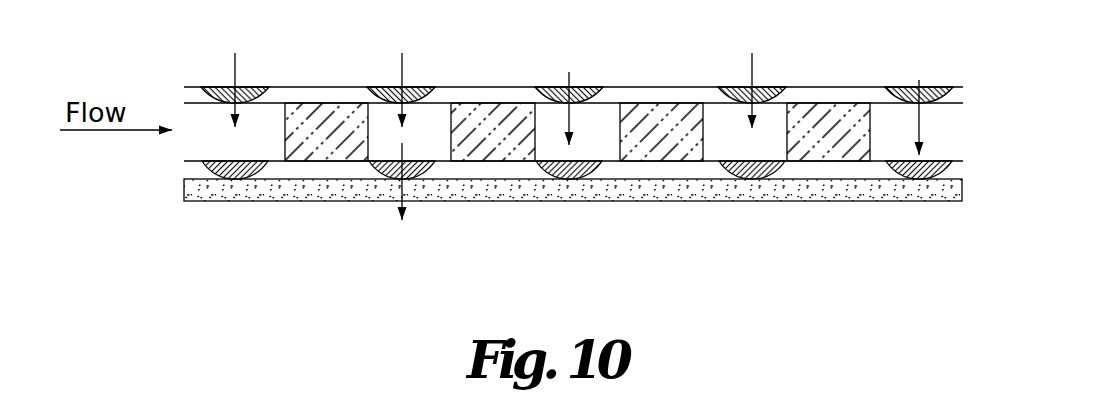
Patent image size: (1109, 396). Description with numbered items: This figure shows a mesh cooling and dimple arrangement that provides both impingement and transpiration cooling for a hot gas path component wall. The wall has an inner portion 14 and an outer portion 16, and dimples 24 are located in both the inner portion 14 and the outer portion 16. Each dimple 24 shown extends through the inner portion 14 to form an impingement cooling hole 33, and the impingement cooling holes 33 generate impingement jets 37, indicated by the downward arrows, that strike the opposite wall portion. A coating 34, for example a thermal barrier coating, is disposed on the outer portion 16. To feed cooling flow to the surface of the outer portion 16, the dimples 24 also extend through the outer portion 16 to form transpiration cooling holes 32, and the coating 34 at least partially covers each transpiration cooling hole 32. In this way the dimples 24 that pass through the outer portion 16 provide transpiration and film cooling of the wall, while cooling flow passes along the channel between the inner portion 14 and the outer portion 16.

The inner portion 14 is at (503, 93).
The outer portion 16 is at (197, 173).
The dimples 24 is at (220, 88).
The transpiration cooling hole 32 is at (400, 170).
The impingement cooling hole 33 is at (400, 87).
The coating 34 is at (628, 199).
The impingement jets 37 is at (752, 62).